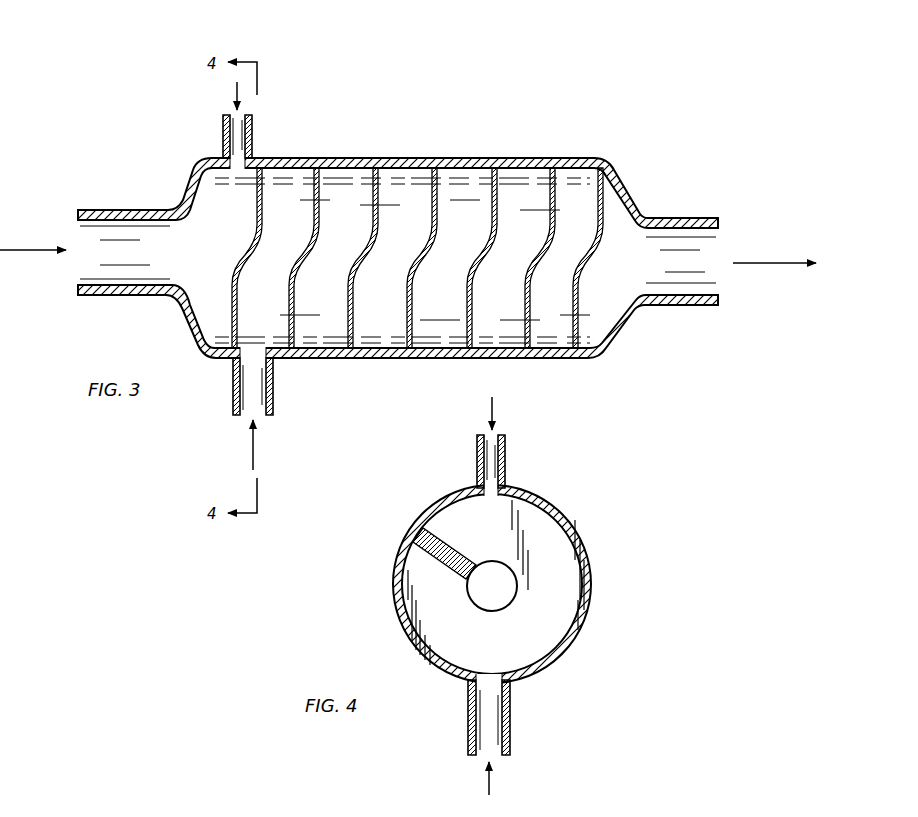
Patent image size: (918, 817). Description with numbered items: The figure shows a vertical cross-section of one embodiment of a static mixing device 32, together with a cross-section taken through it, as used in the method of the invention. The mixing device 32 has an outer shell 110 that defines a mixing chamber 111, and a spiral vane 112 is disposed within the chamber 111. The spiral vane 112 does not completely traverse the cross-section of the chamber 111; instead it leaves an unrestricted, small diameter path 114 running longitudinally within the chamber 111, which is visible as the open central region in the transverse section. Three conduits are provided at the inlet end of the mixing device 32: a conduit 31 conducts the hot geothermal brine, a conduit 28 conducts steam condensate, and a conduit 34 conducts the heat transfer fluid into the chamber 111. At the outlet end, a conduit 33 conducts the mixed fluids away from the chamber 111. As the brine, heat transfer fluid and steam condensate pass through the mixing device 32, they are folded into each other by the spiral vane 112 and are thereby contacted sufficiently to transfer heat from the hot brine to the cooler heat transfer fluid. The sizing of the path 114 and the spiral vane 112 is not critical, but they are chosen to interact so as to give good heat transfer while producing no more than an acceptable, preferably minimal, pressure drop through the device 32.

In FIG. 3, the conduit 28 is at (222, 127).
In FIG. 4, the conduit 28 is at (503, 454).
In FIG. 3, the conduit 31 is at (150, 201).
In FIG. 3, the mixing device 32 is at (398, 231).
In FIG. 4, the mixing device 32 is at (502, 573).
In FIG. 3, the conduit 33 is at (693, 218).
In FIG. 3, the conduit 34 is at (274, 390).
In FIG. 4, the conduit 34 is at (510, 718).
In FIG. 3, the outer shell 110 is at (503, 163).
In FIG. 4, the outer shell 110 is at (570, 640).
In FIG. 3, the mixing chamber 111 is at (381, 320).
In FIG. 3, the spiral vane 112 is at (311, 187).
In FIG. 4, the spiral vane 112 is at (587, 613).
In FIG. 4, the small diameter path 114 is at (492, 586).